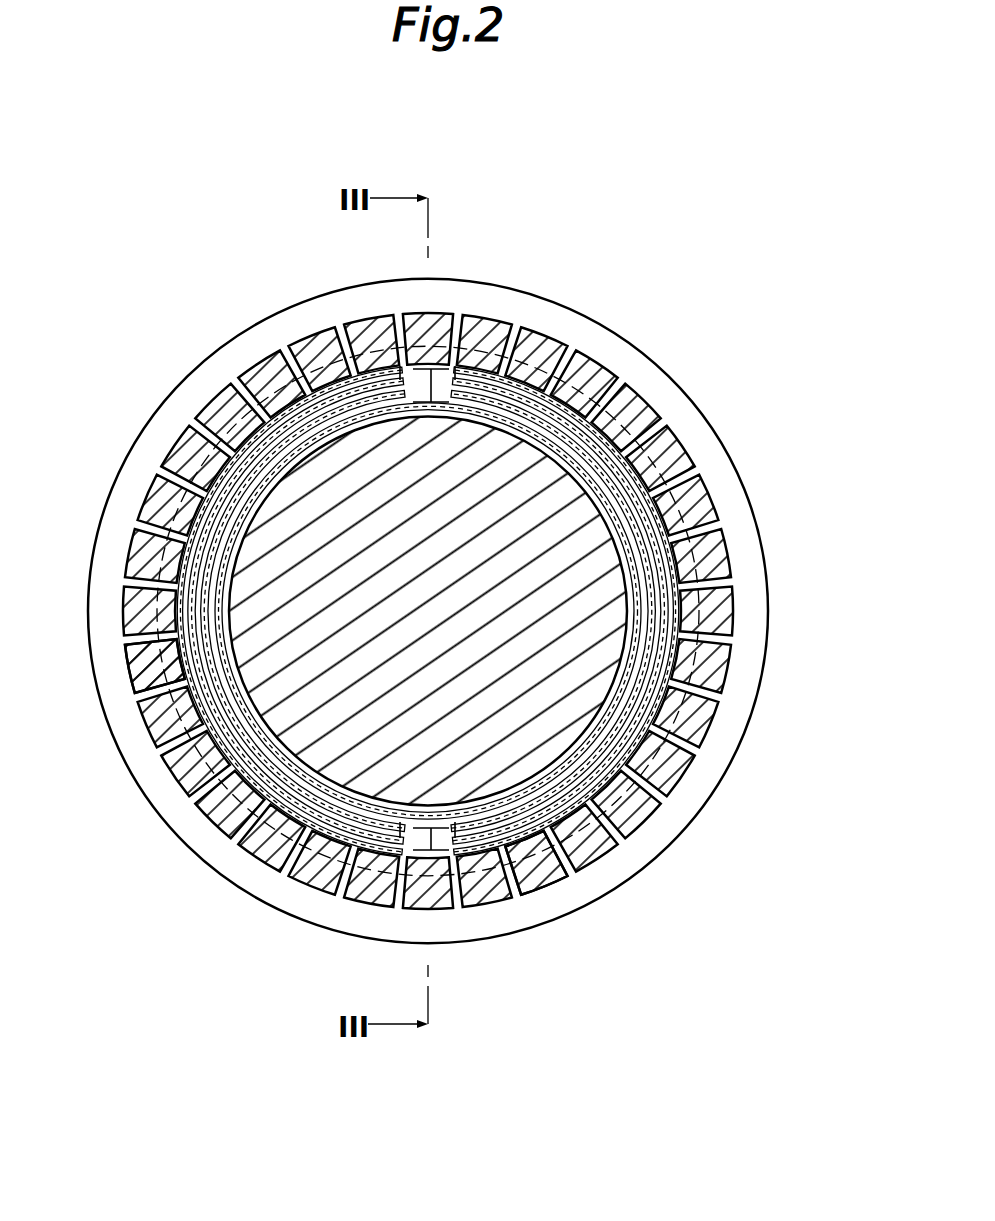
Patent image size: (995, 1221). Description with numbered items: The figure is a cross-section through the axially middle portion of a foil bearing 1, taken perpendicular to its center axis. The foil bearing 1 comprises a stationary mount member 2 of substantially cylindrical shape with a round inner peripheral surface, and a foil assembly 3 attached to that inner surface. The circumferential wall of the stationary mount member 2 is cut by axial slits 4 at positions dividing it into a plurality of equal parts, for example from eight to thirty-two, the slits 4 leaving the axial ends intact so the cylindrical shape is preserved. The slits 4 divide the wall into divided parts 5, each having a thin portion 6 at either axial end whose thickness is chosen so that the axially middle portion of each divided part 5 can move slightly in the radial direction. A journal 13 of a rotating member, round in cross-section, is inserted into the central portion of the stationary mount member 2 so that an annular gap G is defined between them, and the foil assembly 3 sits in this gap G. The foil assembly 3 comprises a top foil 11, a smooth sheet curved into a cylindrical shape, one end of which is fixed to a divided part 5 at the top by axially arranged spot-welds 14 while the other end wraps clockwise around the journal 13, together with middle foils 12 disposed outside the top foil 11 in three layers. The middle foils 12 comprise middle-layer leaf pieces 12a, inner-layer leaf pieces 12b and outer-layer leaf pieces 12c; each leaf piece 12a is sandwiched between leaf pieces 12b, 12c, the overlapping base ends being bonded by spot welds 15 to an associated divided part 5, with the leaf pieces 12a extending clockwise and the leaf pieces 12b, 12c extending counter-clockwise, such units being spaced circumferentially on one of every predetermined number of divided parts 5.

The foil bearing 1 is at (583, 282).
The stationary mount member 2 is at (644, 358).
The foil assembly 3 is at (642, 475).
The axial slits 4 is at (163, 473).
The divided parts 5 is at (140, 733).
The thin portion 6 is at (212, 830).
The top foil 11 is at (683, 503).
The middle foils 12 is at (820, 754).
The middle-layer leaf pieces 12a is at (593, 817).
The inner-layer leaf pieces 12b is at (652, 685).
The outer-layer leaf pieces 12c is at (605, 760).
The journal 13 is at (588, 853).
The spot-welds 14 is at (457, 383).
The spot welds 15 is at (455, 855).
The annular gap G is at (403, 377).